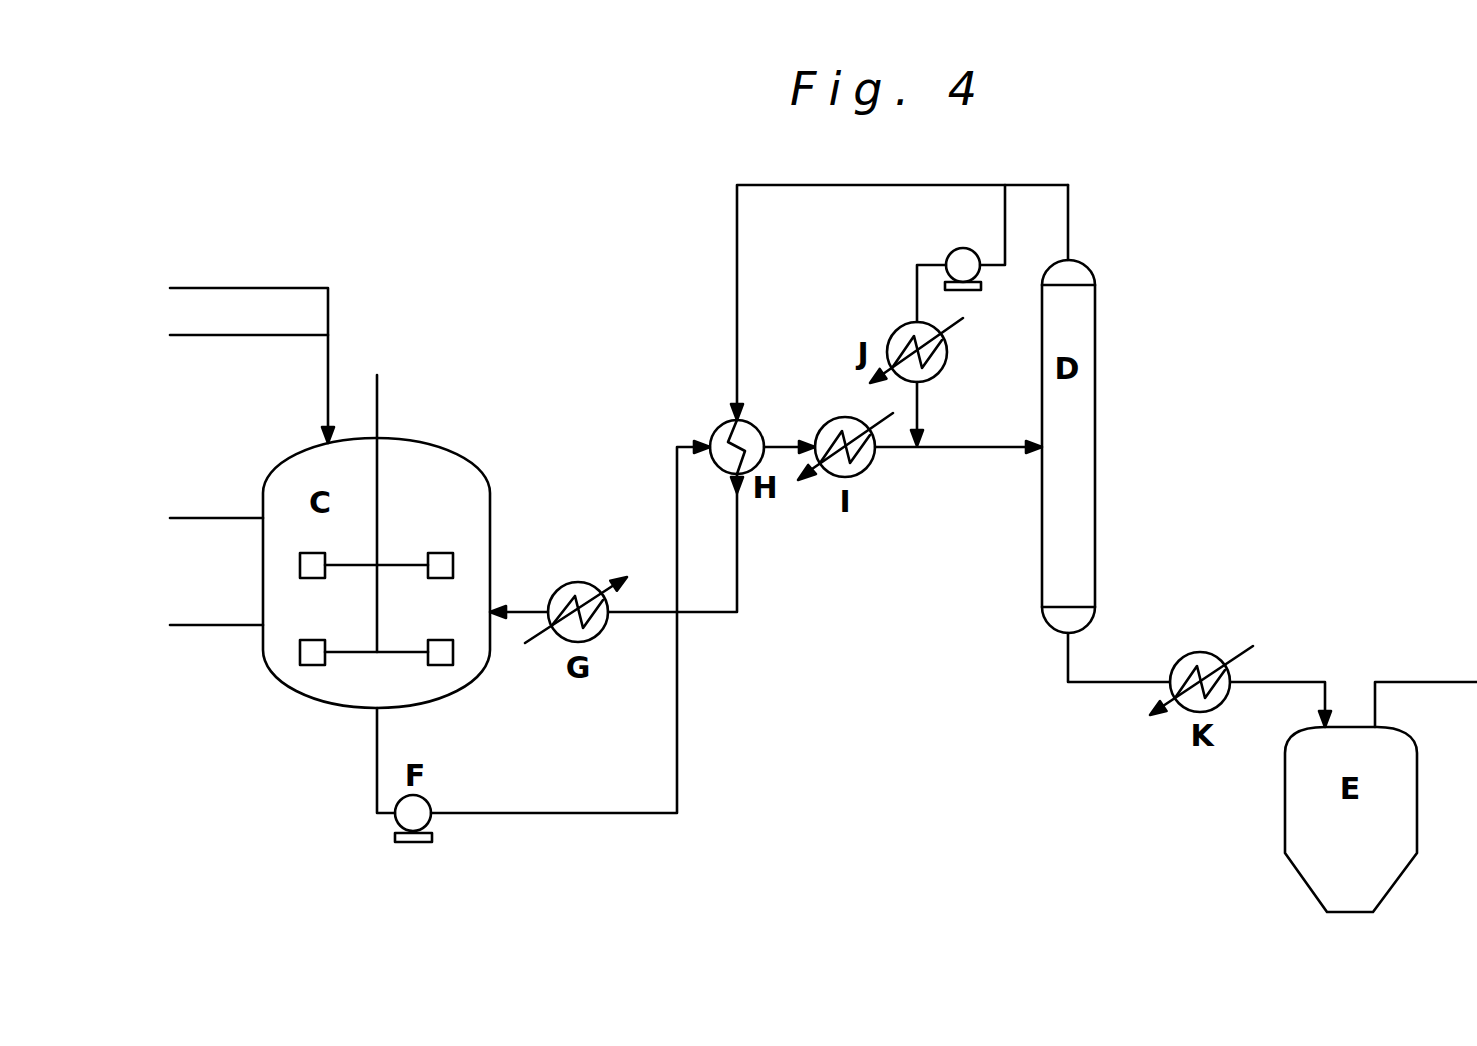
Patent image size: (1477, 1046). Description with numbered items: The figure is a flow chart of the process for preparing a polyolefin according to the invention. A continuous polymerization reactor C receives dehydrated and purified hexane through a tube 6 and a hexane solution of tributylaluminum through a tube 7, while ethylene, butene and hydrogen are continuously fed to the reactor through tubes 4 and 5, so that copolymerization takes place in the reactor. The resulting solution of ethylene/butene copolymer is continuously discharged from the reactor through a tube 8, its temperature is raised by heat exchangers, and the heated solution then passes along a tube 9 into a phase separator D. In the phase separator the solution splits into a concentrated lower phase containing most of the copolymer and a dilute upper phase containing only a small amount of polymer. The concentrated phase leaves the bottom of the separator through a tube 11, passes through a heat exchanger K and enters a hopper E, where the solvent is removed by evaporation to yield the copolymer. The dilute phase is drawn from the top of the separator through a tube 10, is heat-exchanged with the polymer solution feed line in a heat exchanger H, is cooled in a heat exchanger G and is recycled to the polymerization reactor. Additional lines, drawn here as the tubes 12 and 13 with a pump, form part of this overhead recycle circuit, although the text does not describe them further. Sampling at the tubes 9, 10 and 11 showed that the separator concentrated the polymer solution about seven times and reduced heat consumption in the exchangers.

The tube 4 is at (233, 355).
The tube 5 is at (230, 335).
The tube 6 is at (197, 519).
The tube 7 is at (197, 624).
The tube 8 is at (570, 627).
The tube 9 is at (958, 428).
The tube 10 is at (1104, 227).
The tube 11 is at (1119, 683).
The recycle pump line 12 is at (935, 253).
The recycle line to exchanger H 13 is at (899, 302).